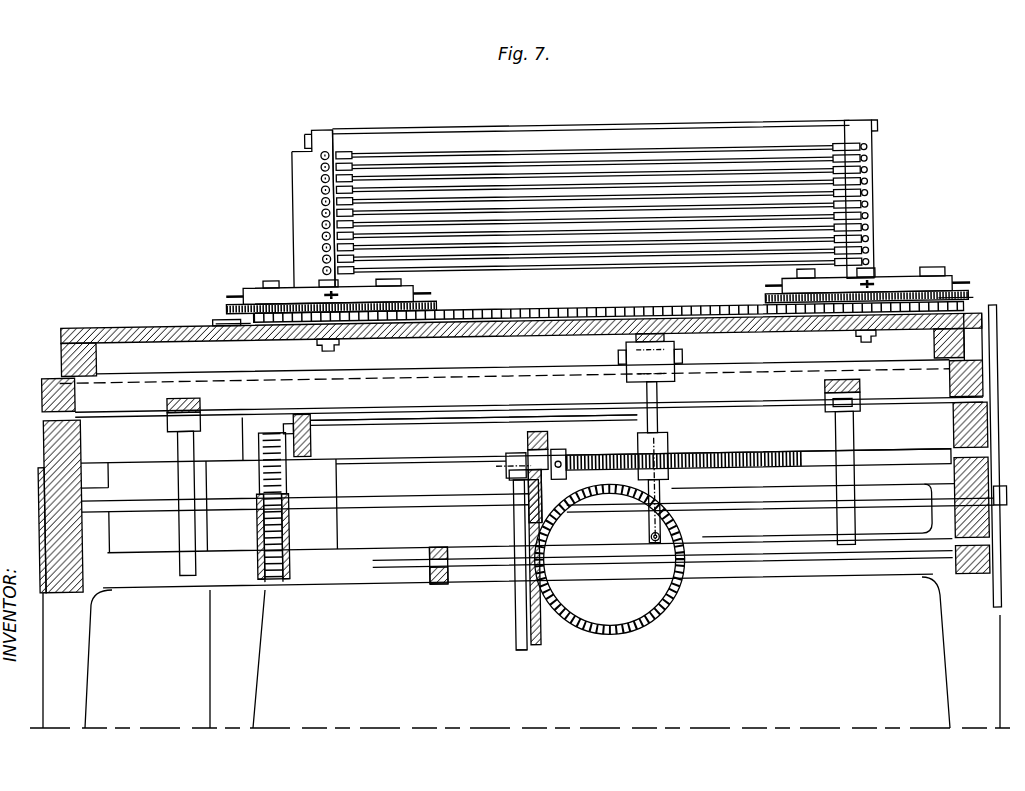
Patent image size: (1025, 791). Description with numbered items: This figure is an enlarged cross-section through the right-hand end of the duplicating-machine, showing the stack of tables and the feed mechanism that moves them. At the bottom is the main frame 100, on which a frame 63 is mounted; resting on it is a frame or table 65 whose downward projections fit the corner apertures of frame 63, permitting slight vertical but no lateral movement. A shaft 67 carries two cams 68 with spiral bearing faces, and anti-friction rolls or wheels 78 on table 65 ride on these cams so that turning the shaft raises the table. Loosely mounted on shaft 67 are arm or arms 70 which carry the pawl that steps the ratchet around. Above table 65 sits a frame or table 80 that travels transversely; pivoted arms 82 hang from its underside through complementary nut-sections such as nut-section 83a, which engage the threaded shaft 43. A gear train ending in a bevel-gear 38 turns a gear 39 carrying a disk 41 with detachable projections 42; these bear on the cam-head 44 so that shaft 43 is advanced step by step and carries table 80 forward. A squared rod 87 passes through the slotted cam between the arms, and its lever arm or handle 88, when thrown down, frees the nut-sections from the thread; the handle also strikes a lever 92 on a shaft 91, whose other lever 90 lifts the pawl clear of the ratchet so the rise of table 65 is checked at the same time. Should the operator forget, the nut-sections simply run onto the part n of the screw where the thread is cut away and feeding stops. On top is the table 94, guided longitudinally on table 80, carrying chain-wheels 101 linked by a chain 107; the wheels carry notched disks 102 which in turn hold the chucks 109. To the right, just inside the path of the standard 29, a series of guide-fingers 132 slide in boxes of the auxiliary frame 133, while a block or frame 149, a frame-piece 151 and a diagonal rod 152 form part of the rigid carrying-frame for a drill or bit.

The standard 29 is at (298, 169).
The bevel-gear 38 is at (655, 603).
The gear 39 is at (538, 636).
The disk 41 is at (512, 522).
The detachable projections 42 is at (522, 655).
The threaded shaft 43 is at (742, 459).
The cam-head 44 is at (505, 468).
The frame 63 is at (42, 428).
The frame or table 65 is at (42, 382).
The shaft 67 is at (371, 497).
The cams 68 is at (185, 517).
The arm or arms 70 is at (298, 469).
The anti-friction rolls or wheels 78 is at (183, 426).
The frame or table 80 is at (66, 352).
The arms 82 is at (660, 394).
The nut-section 83a is at (662, 441).
The squared rod 87 is at (893, 508).
The lever arm or handle 88 is at (995, 353).
The lever 90 is at (293, 421).
The shaft 91 is at (421, 431).
The lever 92 is at (993, 413).
The table 94 is at (82, 320).
The frame 100 is at (401, 566).
The chain-wheels 101 is at (212, 317).
The disks 102 is at (223, 300).
The chain 107 is at (632, 312).
The chucks 109 is at (598, 289).
The guide-fingers 132 is at (327, 180).
The auxiliary frame 133 is at (625, 129).
The block or frame 149 is at (345, 150).
The frame-piece 151 is at (845, 151).
The rod 152 is at (677, 153).
The thread-free part of the screw n is at (803, 463).